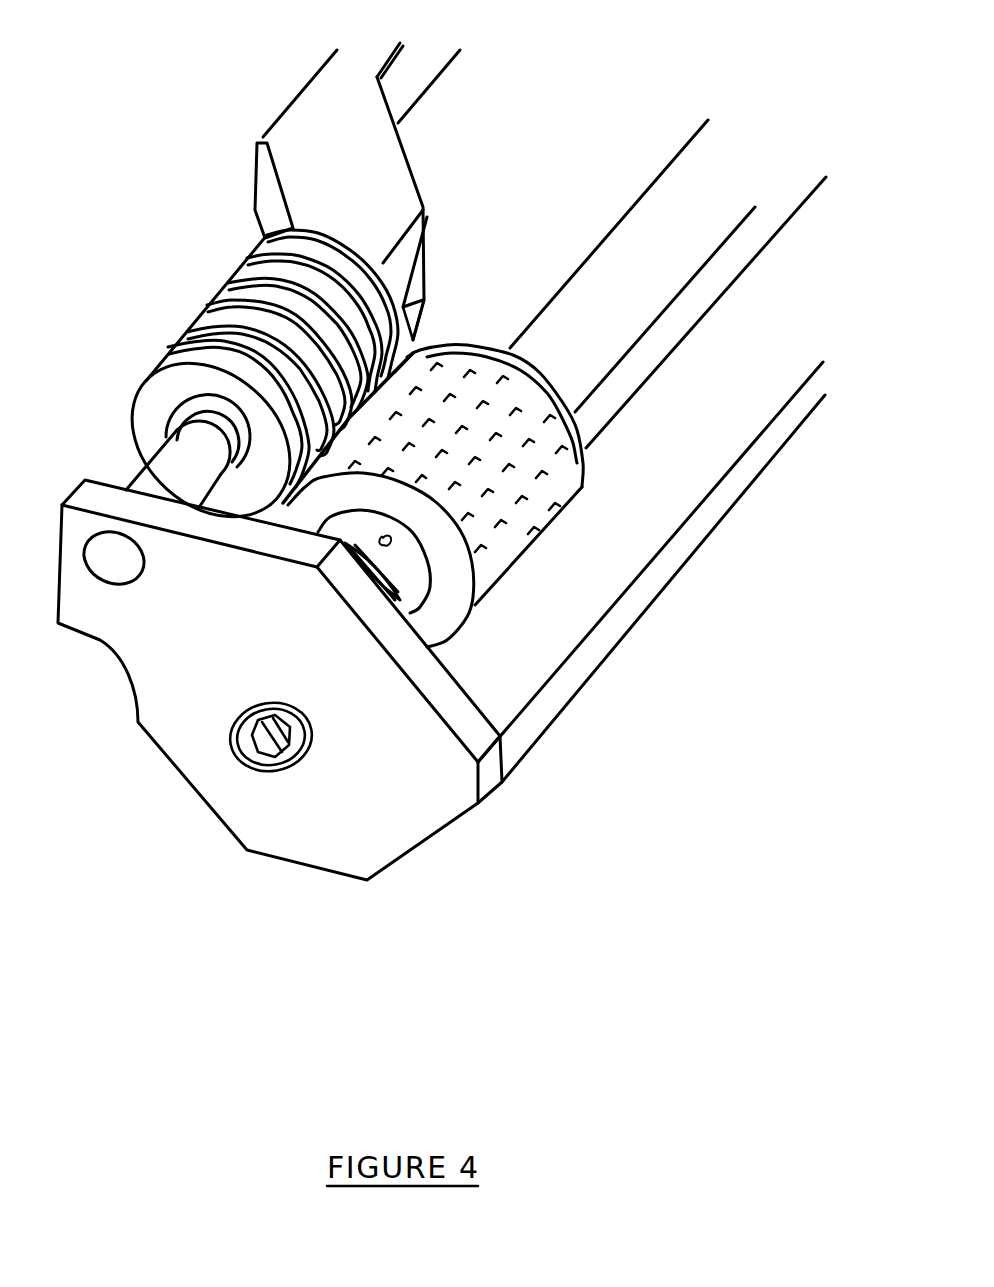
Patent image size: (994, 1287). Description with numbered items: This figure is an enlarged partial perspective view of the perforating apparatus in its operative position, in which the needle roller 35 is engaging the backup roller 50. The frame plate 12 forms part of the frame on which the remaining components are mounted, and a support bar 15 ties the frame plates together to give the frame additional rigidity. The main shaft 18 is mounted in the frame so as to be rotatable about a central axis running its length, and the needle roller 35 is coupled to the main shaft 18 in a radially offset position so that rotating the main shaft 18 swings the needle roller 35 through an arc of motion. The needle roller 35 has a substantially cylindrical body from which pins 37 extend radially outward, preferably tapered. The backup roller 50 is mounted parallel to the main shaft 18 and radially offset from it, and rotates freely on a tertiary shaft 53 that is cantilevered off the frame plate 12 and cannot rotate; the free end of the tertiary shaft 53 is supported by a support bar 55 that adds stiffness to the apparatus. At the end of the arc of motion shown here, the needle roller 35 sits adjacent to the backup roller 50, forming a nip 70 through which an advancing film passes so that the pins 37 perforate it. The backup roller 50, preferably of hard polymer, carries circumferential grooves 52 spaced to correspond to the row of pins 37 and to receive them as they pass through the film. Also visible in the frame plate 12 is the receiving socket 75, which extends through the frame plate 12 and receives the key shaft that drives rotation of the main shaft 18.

The frame plate 12 is at (410, 887).
The support bar 15 is at (746, 524).
The main shaft 18 is at (628, 178).
The needle roller 35 is at (486, 313).
The pins 37 is at (445, 347).
The backup roller 50 is at (195, 271).
The grooves 52 is at (172, 348).
The tertiary shaft 53 is at (114, 475).
The support bar 55 is at (278, 74).
The nip 70 is at (410, 310).
The receiving socket 75 is at (236, 775).